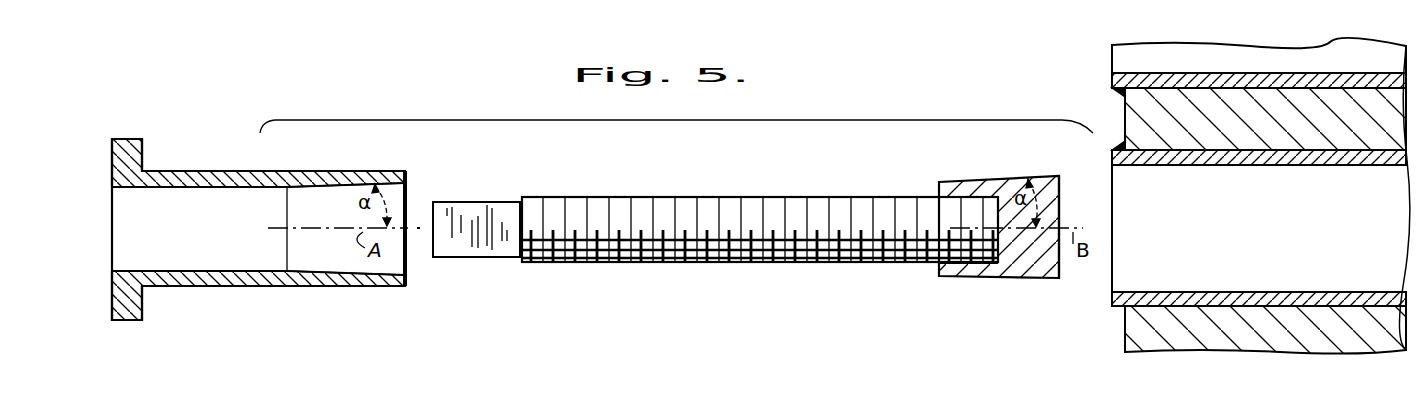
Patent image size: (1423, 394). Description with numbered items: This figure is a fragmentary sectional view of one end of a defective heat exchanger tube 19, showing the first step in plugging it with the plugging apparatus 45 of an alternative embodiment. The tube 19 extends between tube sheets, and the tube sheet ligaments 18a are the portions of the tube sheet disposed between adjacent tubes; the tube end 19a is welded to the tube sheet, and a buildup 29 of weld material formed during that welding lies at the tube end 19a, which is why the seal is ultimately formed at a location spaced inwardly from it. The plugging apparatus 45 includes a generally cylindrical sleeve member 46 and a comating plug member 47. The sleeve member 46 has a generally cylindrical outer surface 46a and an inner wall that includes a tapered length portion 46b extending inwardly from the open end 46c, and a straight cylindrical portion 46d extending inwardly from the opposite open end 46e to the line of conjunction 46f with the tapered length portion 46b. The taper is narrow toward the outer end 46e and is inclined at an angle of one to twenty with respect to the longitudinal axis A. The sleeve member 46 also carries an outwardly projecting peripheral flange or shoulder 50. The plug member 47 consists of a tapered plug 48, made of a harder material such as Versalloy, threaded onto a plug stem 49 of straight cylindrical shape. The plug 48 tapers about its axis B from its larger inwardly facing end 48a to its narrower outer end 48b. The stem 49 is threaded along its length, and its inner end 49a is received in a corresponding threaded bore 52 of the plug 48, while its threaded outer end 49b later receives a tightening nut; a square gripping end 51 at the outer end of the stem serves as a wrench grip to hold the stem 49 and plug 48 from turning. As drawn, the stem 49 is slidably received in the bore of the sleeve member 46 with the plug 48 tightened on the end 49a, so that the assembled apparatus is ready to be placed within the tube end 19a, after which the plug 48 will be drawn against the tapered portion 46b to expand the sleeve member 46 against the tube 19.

The plugging apparatus 45 is at (456, 102).
The sleeve member 46 is at (243, 292).
The cylindrical outer surface 46a is at (307, 287).
The tapered length portion 46b is at (409, 268).
The open end 46c is at (410, 196).
The straight cylindrical portion 46d is at (216, 270).
The opposite open end 46e is at (113, 233).
The line of conjunction 46f is at (290, 199).
The plug member 47 is at (775, 273).
The tapered plug portion 48 is at (1013, 286).
The inwardly facing end 48a is at (1072, 291).
The outer end 48b is at (938, 272).
The plug stem 49 is at (678, 258).
The inner end 49a is at (953, 202).
The threaded outer end 49b is at (555, 263).
The peripheral flange 50 is at (125, 313).
The square gripping end 51 is at (497, 210).
The threaded bore 52 is at (960, 263).
The heat exchanger tube 19 is at (1243, 61).
The tube end 19a is at (1110, 74).
The tube sheet ligament 18a is at (1157, 105).
The buildup of weld material 29 is at (1121, 148).